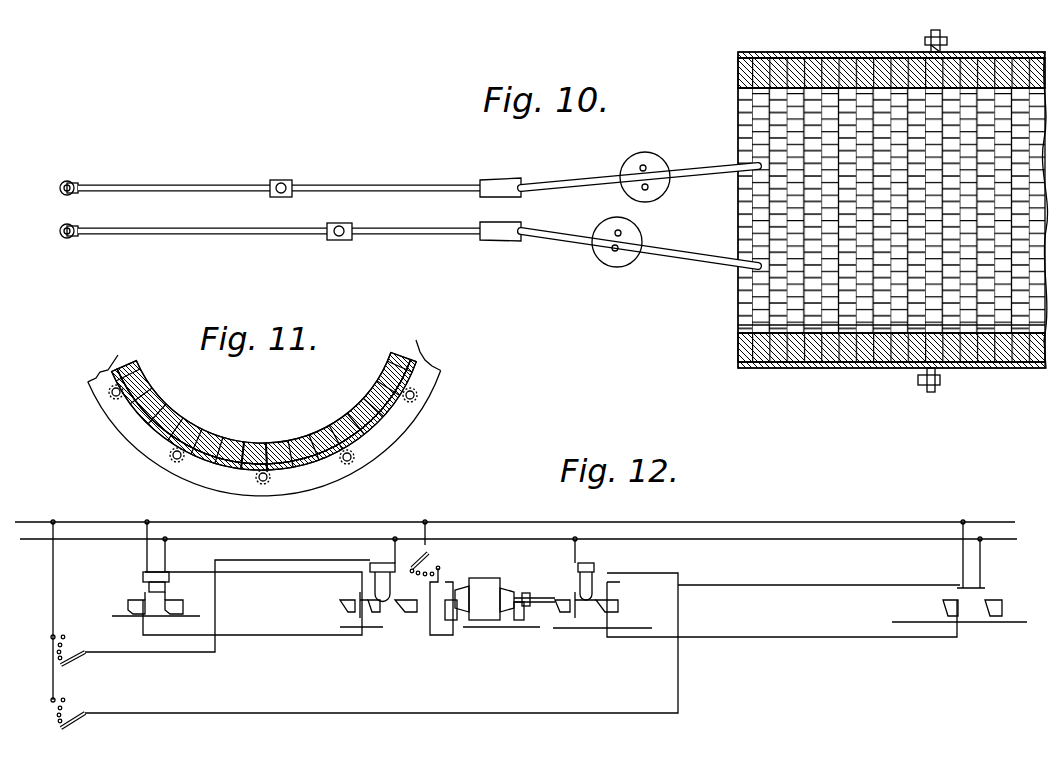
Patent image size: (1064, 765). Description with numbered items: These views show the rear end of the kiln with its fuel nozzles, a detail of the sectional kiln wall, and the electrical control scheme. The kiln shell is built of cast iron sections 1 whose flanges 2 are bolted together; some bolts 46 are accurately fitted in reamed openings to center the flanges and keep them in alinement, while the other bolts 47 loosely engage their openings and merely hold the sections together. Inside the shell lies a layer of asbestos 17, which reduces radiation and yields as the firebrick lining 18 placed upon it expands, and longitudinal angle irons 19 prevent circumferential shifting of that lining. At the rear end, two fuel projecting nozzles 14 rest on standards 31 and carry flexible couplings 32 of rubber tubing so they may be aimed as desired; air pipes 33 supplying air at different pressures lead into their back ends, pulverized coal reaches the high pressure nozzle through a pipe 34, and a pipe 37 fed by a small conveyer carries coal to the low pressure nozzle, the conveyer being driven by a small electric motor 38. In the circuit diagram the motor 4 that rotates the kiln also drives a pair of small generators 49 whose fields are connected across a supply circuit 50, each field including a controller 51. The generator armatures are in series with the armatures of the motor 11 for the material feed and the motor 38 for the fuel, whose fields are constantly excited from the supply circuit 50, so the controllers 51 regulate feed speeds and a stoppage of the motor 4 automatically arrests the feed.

In FIG. 10, the cast iron section 1 is at (1002, 49).
In FIG. 11, the cast iron section 1 is at (200, 418).
In FIG. 10, the flange 2 is at (937, 32).
In FIG. 11, the flange 2 is at (397, 426).
In FIG. 12, the motor 4 is at (509, 613).
In FIG. 12, the motor 11 is at (852, 584).
In FIG. 10, the fuel projecting nozzle 14 is at (710, 177).
In FIG. 10, the asbestos layer 17 is at (836, 360).
In FIG. 11, the asbestos layer 17 is at (170, 452).
In FIG. 10, the firebrick lining 18 is at (747, 346).
In FIG. 11, the angle iron 19 is at (259, 440).
In FIG. 10, the standard 31 is at (621, 233).
In FIG. 10, the coupling 32 is at (500, 212).
In FIG. 10, the air pipe 33 is at (175, 190).
In FIG. 10, the pipe 34 is at (330, 240).
In FIG. 10, the pipe 37 is at (282, 179).
In FIG. 12, the electric motor 38 is at (231, 577).
In FIG. 10, the bolt 46 is at (928, 41).
In FIG. 11, the bolt 46 is at (270, 478).
In FIG. 10, the bolt 47 is at (940, 382).
In FIG. 11, the bolt 47 is at (357, 457).
In FIG. 12, the generator 49 is at (613, 560).
In FIG. 12, the supply circuit 50 is at (516, 520).
In FIG. 12, the controller 51 is at (364, 634).